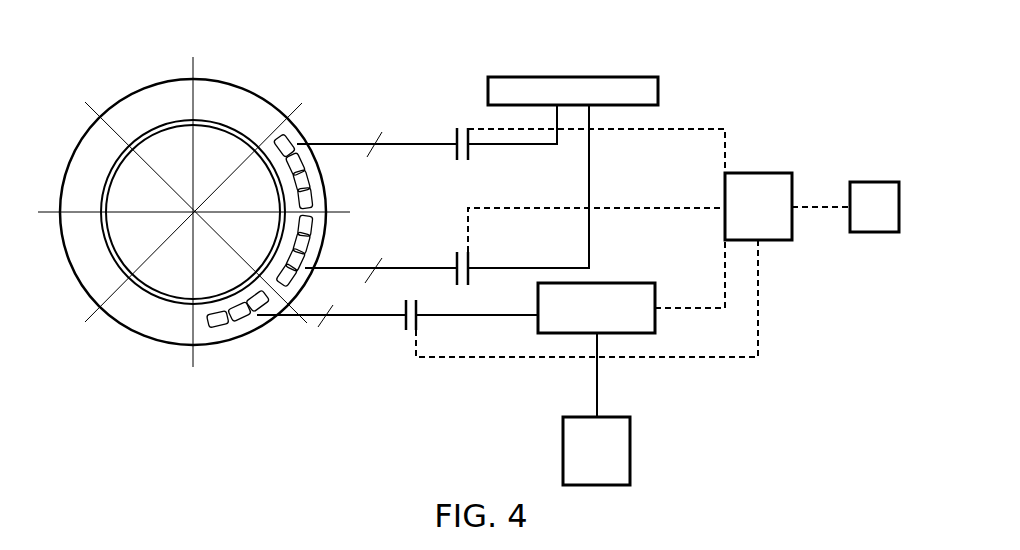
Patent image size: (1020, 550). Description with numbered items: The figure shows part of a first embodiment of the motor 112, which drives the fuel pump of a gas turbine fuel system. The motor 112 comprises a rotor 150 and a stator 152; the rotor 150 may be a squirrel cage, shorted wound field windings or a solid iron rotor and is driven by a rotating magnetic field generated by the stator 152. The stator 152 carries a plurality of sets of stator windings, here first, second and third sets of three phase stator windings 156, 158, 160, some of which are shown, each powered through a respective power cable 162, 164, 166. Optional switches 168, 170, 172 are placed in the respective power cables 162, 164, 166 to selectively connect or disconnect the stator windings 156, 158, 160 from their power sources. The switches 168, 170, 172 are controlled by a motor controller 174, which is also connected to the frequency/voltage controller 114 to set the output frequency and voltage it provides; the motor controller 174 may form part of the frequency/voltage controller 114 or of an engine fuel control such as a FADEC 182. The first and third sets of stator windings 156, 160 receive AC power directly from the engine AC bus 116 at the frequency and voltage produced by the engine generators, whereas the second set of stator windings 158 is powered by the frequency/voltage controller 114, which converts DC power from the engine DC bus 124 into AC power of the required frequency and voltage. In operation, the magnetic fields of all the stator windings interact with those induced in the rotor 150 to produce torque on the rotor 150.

The motor 112 is at (458, 390).
The frequency/voltage controller 114 is at (640, 282).
The engine AC bus 116 is at (573, 76).
The engine DC bus 124 is at (630, 450).
The rotor 150 is at (197, 122).
The stator 152 is at (265, 97).
The first set of three phase stator windings 156 is at (293, 127).
The second set of three phase stator windings 158 is at (232, 333).
The third set of three phase stator windings 160 is at (305, 243).
The power cable 162 is at (410, 143).
The power cable 164 is at (392, 266).
The power cable 166 is at (370, 320).
The switch 168 is at (465, 127).
The switch 170 is at (470, 260).
The switch 172 is at (407, 333).
The motor controller 174 is at (755, 171).
The FADEC 182 is at (873, 182).